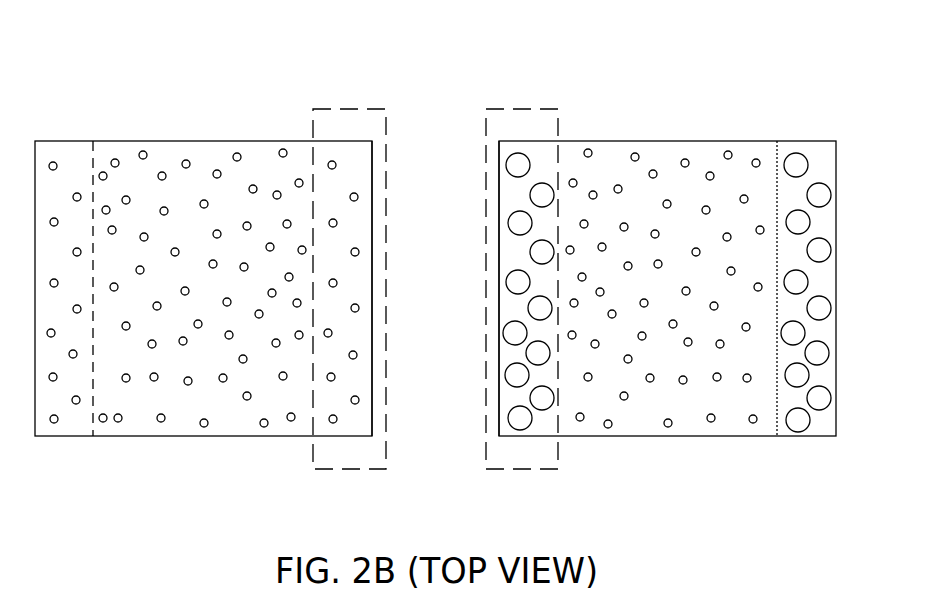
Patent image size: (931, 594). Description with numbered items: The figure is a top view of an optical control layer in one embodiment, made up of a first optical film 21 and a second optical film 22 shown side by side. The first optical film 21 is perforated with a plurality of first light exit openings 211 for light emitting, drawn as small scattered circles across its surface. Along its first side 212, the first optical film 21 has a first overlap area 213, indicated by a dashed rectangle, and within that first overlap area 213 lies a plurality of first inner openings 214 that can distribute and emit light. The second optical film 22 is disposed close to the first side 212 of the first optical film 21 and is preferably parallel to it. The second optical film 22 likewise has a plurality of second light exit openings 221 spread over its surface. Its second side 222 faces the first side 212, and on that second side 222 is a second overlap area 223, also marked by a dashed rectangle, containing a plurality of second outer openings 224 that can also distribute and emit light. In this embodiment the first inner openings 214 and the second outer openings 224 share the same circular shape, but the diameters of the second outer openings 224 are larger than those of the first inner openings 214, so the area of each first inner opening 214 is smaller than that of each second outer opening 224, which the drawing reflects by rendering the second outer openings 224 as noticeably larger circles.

The first optical film 21 is at (155, 141).
The first light exit openings 211 is at (217, 169).
The first side 212 is at (376, 268).
The first overlap area 213 is at (358, 109).
The first inner openings 214 is at (328, 160).
The second optical film 22 is at (717, 141).
The second light exit openings 221 is at (653, 169).
The second side 222 is at (495, 268).
The second overlap area 223 is at (497, 109).
The second outer openings 224 is at (527, 154).